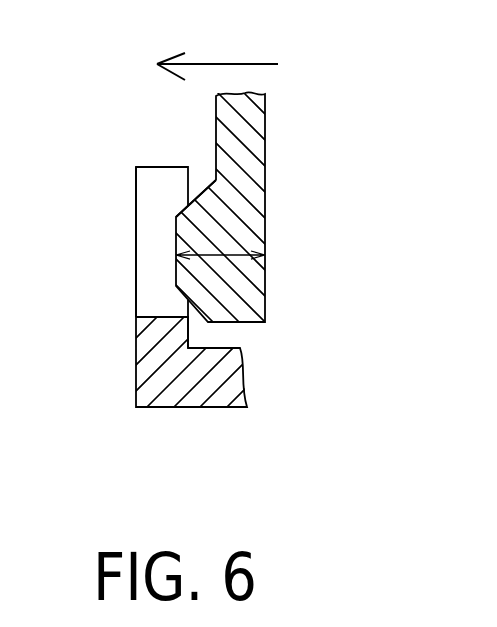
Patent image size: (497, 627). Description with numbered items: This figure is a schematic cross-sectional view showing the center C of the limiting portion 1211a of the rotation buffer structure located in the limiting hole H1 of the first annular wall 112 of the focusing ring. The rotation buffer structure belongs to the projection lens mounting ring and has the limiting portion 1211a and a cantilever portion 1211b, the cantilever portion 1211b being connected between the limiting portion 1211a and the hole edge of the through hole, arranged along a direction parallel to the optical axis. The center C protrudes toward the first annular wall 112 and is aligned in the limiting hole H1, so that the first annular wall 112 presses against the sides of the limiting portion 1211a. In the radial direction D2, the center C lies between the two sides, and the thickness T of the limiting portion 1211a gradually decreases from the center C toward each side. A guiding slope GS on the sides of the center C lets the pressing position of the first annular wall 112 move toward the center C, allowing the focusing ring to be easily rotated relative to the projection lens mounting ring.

The first annular wall 112 is at (135, 357).
The limiting portion 1211a is at (245, 228).
The cantilever portion 1211b is at (243, 142).
The center C is at (175, 225).
The guiding slope GS is at (193, 186).
The limiting hole H1 is at (123, 202).
The thickness T is at (222, 257).
The radial direction D2 is at (217, 55).